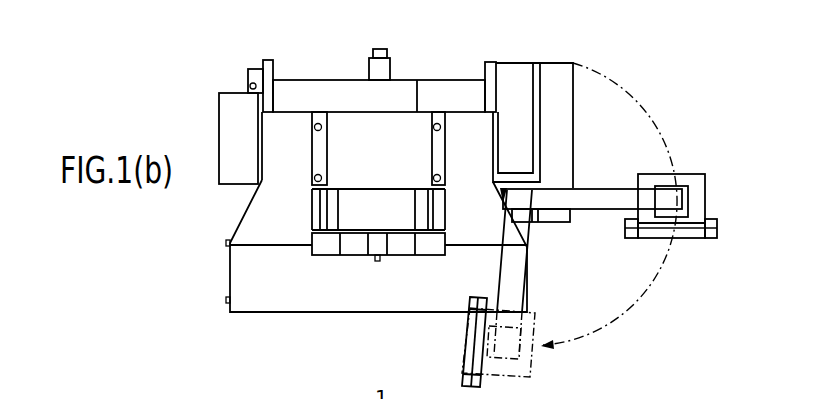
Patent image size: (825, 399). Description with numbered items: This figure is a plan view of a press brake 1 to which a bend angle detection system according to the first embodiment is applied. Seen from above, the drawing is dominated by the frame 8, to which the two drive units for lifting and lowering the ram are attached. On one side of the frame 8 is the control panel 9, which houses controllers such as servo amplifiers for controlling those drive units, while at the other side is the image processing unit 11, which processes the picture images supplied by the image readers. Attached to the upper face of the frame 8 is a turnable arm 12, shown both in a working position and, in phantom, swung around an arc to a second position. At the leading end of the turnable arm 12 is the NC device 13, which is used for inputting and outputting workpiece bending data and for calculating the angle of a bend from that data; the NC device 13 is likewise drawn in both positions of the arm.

The press brake 1 is at (415, 72).
The frame 8 is at (285, 218).
The control panel 9 is at (558, 102).
The image processing unit 11 is at (230, 133).
The turnable arm 12 is at (603, 198).
The NC device 13 is at (695, 193).